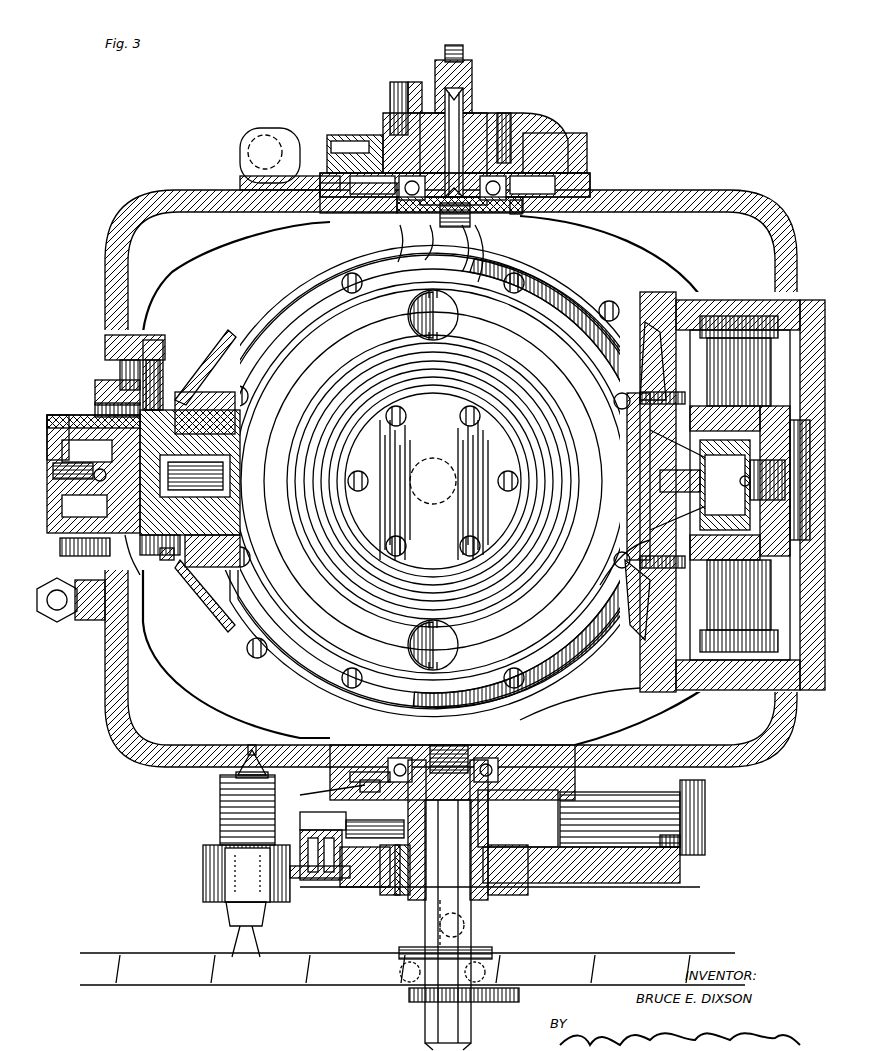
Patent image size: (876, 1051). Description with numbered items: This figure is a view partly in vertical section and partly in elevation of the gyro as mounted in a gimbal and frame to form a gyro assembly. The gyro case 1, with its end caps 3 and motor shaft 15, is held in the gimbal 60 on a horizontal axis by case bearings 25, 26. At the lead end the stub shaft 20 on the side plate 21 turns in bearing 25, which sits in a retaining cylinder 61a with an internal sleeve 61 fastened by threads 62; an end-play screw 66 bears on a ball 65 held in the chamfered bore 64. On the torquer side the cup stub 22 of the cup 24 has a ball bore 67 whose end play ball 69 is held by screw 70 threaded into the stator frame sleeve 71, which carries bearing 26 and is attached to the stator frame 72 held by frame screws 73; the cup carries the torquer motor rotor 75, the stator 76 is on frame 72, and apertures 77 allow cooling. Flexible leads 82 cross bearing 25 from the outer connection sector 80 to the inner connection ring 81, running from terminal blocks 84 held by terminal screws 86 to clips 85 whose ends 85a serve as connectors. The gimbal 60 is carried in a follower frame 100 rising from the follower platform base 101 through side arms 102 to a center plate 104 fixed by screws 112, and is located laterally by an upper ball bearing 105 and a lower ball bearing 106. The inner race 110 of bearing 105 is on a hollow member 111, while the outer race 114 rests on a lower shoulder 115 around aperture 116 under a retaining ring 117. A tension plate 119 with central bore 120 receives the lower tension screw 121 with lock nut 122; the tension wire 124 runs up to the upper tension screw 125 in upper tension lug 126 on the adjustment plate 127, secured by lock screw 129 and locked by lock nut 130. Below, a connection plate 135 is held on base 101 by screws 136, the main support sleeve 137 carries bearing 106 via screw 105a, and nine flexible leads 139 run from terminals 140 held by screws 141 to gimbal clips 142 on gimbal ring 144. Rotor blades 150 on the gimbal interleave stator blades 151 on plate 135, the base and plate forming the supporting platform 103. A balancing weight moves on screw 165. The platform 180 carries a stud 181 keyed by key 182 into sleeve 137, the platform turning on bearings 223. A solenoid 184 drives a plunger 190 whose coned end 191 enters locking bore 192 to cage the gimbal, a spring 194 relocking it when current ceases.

The gyro case 1 is at (552, 336).
The end cap 3 is at (442, 421).
The motor shaft 15 is at (433, 504).
The stub shaft 20 is at (198, 508).
The side plate 21 is at (225, 541).
The cup stub 22 is at (690, 380).
The cup 24 is at (702, 300).
The case bearing 25 is at (142, 540).
The case bearing 26 is at (620, 572).
The gimbal 60 is at (748, 215).
The internal sleeve 61 is at (80, 415).
The retaining cylinder 61a is at (140, 566).
The threads 62 is at (68, 545).
The bore 64 is at (146, 412).
The ball 65 is at (70, 490).
The end-play screw 66 is at (48, 415).
The ball bore 67 is at (745, 481).
The end play ball 69 is at (710, 490).
The screw 70 is at (690, 498).
The stator frame sleeve 71 is at (752, 440).
The stator frame 72 is at (762, 625).
The frame screws 73 is at (805, 660).
The torquer motor rotor 75 is at (750, 316).
The stator 76 is at (715, 640).
The apertures 77 is at (795, 305).
The outer connection sector 80 is at (156, 340).
The inner connection ring 81 is at (166, 552).
The flexible leads 82 is at (118, 382).
The terminal block 84 is at (148, 336).
The clip 85 is at (215, 416).
The ends of the clips 85a is at (182, 398).
The terminal screws 86 is at (112, 352).
The follower frame 100 is at (572, 150).
The follower platform base 101 is at (515, 896).
The side arms 102 is at (565, 712).
The supporting platform 103 is at (596, 885).
The center plate 104 is at (535, 112).
The upper ball bearing 105 is at (576, 180).
The screw 105a is at (460, 750).
The lower ball bearing 106 is at (405, 750).
The inner race 110 is at (488, 200).
The hollow member 111 is at (480, 108).
The screws 112 is at (505, 113).
The outer race 114 is at (518, 208).
The lower shoulder 115 is at (372, 215).
The aperture 116 is at (412, 215).
The retaining ring 117 is at (550, 140).
The tension plate 119 is at (398, 262).
The central bore 120 is at (428, 256).
The lower tension screw 121 is at (470, 268).
The lock nut 122 is at (483, 280).
The tension wire 124 is at (445, 152).
The upper tension screw 125 is at (452, 58).
The upper tension lug 126 is at (460, 90).
The adjustment plate 127 is at (418, 82).
The lock screw 129 is at (394, 82).
The lock nut 130 is at (440, 60).
The connection plate 135 is at (335, 880).
The screws 136 is at (406, 895).
The main support sleeve 137 is at (400, 900).
The flexible leads 139 is at (385, 830).
The terminal 140 is at (302, 820).
The screws 141 is at (302, 841).
The gimbal clips 142 is at (305, 795).
The gimbal ring 144 is at (350, 776).
The rotor blades 150 is at (705, 836).
The stator blades 151 is at (680, 845).
The screw 165 is at (57, 600).
The platform 180 is at (615, 955).
The stud 181 is at (465, 928).
The key 182 is at (470, 832).
The solenoid 184 is at (210, 875).
The plunger 190 is at (220, 818).
The coned end 191 is at (238, 772).
The locking bore 192 is at (248, 748).
The spring 194 is at (236, 790).
The bearings 223 is at (497, 1000).